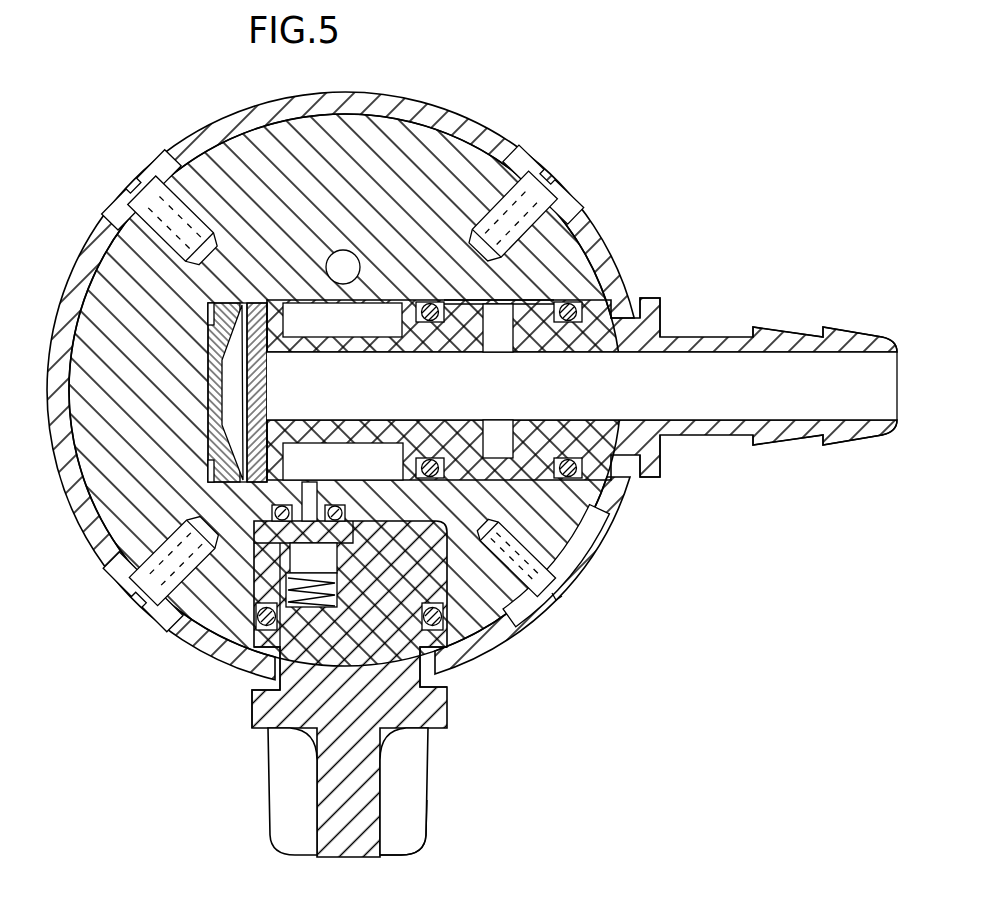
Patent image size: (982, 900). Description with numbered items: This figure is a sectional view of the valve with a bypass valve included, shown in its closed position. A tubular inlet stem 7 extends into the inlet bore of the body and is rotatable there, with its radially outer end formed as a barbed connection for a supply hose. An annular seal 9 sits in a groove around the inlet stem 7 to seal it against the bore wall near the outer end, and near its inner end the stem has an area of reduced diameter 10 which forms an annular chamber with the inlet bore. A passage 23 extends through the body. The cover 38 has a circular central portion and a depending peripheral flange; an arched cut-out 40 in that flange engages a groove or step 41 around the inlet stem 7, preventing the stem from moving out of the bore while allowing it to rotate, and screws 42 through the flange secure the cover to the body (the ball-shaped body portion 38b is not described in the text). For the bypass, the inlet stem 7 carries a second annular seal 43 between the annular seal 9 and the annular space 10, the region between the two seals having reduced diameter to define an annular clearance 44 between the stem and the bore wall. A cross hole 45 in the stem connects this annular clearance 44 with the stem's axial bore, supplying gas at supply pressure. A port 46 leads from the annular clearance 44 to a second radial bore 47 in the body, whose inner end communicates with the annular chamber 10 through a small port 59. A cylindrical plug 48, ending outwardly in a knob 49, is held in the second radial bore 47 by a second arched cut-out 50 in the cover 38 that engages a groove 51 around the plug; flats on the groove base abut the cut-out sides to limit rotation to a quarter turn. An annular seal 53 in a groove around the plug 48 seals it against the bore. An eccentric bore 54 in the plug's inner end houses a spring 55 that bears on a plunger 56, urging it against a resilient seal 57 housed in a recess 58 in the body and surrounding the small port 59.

The tubular inlet stem 7 is at (675, 335).
The annular seal 9 is at (598, 298).
The area of reduced diameter 10 is at (363, 453).
The passage 23 is at (343, 262).
The cover 38 is at (448, 122).
The ball body 38b is at (88, 262).
The arched cut-out 40 is at (641, 305).
The groove or step 41 is at (634, 464).
The screws 42 is at (147, 163).
The second annular seal 43 is at (435, 300).
The annular clearance 44 is at (527, 303).
The cross hole 45 is at (500, 435).
The port 46 is at (462, 497).
The second radial bore 47 is at (503, 627).
The cylindrical plug 48 is at (432, 732).
The knob 49 is at (428, 807).
The second arched cut-out 50 is at (425, 670).
The groove 51 is at (277, 672).
The annular seal 53 is at (457, 633).
The eccentric bore 54 is at (313, 610).
The spring 55 is at (337, 600).
The plunger 56 is at (342, 528).
The resilient seal 57 is at (255, 590).
The recess 58 is at (293, 513).
The small port 59 is at (306, 488).